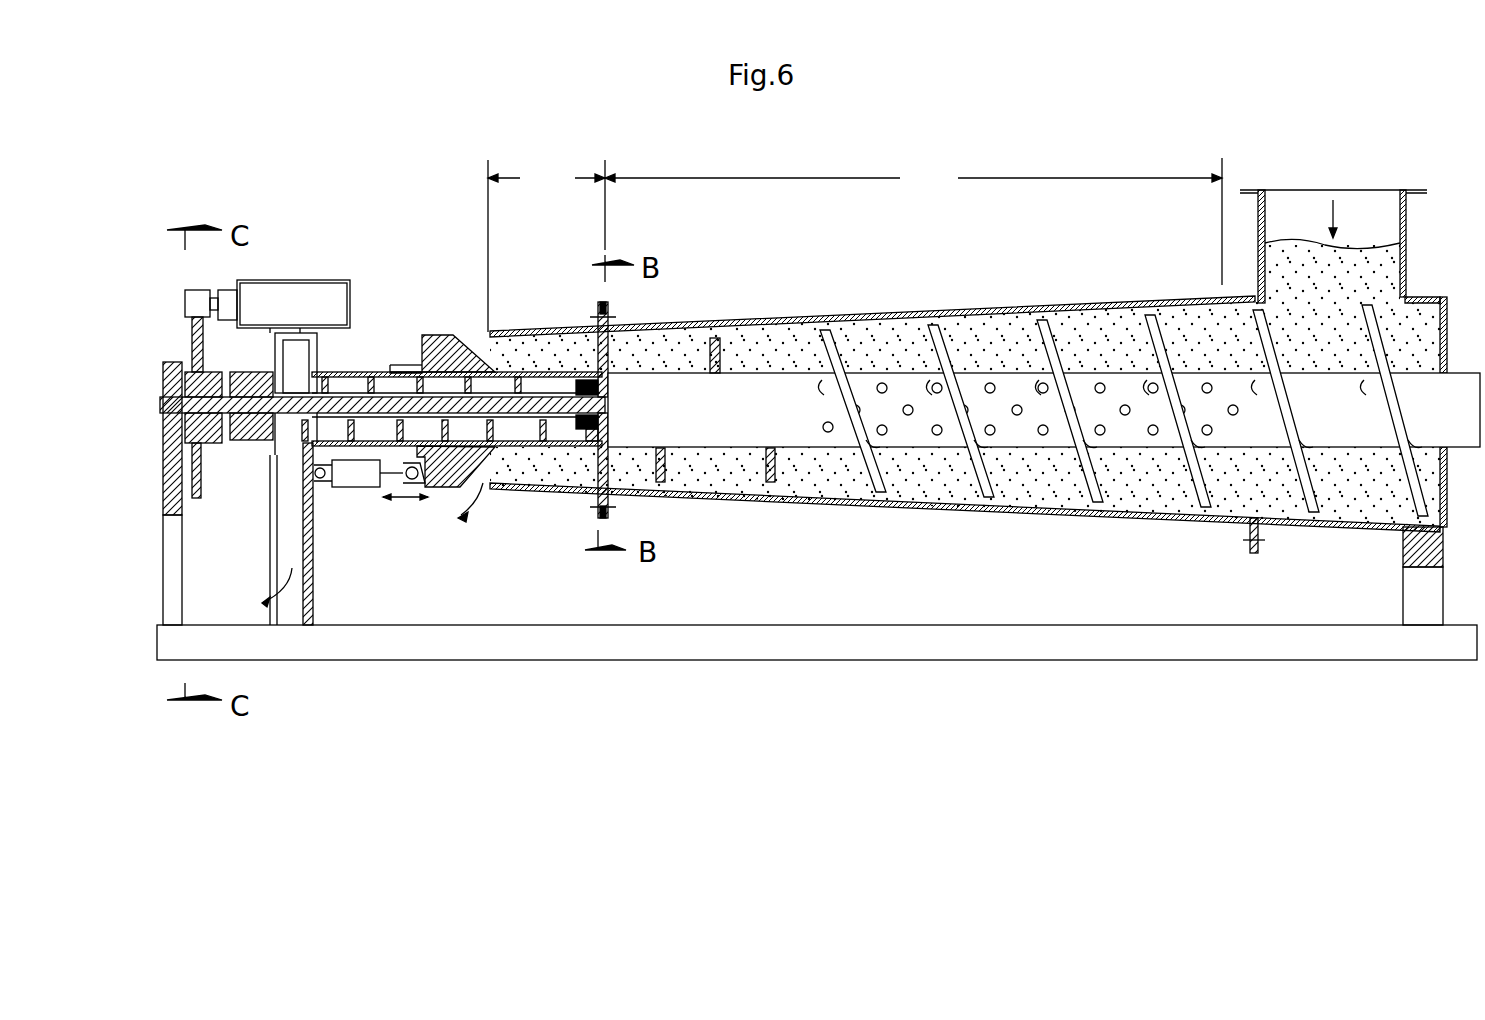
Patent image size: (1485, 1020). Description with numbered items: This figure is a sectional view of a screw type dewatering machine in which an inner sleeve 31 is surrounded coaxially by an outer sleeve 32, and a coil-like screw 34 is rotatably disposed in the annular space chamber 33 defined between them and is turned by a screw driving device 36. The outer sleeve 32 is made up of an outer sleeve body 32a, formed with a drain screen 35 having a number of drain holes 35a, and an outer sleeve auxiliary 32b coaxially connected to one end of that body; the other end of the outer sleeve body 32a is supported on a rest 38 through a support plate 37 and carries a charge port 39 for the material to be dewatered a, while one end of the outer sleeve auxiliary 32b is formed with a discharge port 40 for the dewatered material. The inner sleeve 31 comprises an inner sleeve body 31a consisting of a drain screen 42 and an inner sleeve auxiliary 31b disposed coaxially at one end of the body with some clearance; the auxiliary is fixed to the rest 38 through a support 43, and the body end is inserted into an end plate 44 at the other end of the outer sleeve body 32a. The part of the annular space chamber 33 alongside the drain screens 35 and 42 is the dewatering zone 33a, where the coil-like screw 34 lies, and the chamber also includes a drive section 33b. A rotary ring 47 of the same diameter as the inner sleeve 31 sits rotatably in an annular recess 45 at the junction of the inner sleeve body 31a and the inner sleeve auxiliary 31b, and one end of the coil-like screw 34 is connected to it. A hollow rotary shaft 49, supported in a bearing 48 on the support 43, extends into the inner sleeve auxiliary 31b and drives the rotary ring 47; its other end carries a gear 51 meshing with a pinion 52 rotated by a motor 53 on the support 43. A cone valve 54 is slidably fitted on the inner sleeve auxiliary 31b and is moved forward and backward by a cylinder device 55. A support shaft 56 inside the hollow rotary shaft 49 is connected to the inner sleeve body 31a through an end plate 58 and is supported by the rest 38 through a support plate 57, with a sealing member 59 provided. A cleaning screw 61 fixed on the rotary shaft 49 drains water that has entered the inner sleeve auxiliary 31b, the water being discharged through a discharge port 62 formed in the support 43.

The inner sleeve 31 is at (929, 448).
The inner sleeve body 31a is at (1128, 380).
The inner sleeve auxiliary 31b is at (345, 372).
The outer sleeve 32 is at (1040, 514).
The outer sleeve body 32a is at (812, 414).
The outer sleeve auxiliary 32b is at (535, 488).
The annular space chamber 33 is at (900, 325).
The dewatering zone 33a is at (913, 221).
The drive section 33b is at (546, 246).
The coil-like screw 34 is at (886, 494).
The drain screen 35 is at (1094, 300).
The drain holes 35a is at (1134, 517).
The screw driving device 36 is at (326, 275).
The support plate 37 is at (1412, 595).
The rest 38 is at (761, 629).
The charge port 39 is at (1297, 214).
The discharge port 40 is at (478, 519).
The drain screen 42 is at (1005, 384).
The support 43 is at (313, 552).
The end plate 44 is at (1448, 310).
The annular recess 45 is at (588, 437).
The rotary ring 47 is at (614, 358).
The bearing 48 is at (238, 438).
The hollow rotary shaft 49 is at (515, 375).
The gear 51 is at (193, 334).
The pinion 52 is at (190, 284).
The motor 53 is at (292, 298).
The cone valve 54 is at (442, 339).
The cylinder device 55 is at (357, 477).
The support shaft 56 is at (162, 405).
The support plate 57 is at (178, 537).
The end plate 58 is at (618, 394).
The sealing member 59 is at (578, 368).
The cleaning screw 61 is at (370, 378).
The discharge port 62 is at (272, 580).
The material to be dewatered a is at (1362, 262).